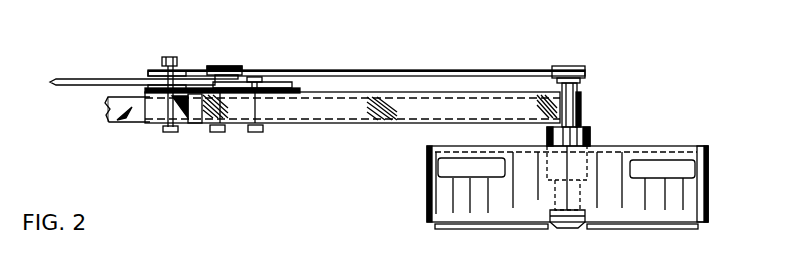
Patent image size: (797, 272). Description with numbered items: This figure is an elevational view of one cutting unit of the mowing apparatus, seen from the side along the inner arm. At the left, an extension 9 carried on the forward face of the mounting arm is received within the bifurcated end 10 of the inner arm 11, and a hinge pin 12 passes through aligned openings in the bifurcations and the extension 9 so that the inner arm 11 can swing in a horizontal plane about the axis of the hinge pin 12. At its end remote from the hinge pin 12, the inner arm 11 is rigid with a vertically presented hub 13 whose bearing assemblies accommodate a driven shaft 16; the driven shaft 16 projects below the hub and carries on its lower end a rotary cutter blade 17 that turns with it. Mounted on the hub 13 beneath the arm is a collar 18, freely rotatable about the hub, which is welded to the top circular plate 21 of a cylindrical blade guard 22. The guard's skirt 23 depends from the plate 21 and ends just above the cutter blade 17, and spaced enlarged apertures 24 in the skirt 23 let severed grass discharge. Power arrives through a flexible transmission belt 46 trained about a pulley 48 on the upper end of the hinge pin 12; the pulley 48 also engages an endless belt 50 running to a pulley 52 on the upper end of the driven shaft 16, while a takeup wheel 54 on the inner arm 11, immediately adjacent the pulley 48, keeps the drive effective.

The extension 9 is at (107, 117).
The bifurcated end 10 is at (190, 130).
The inner arm 11 is at (360, 122).
The hinge pin 12 is at (185, 96).
The hub 13 is at (578, 107).
The driven shaft 16 is at (580, 92).
The rotary cutter blade 17 is at (618, 228).
The collar 18 is at (588, 130).
The top circular plate 21 is at (683, 146).
The cylindrical blade guard 22 is at (697, 205).
The skirt 23 is at (670, 217).
The enlarged apertures 24 is at (440, 172).
The flexible transmission belt 46 is at (84, 78).
The pulley 48 is at (150, 67).
The endless belt 50 is at (358, 70).
The pulley 52 is at (583, 68).
The takeup wheel 54 is at (240, 64).